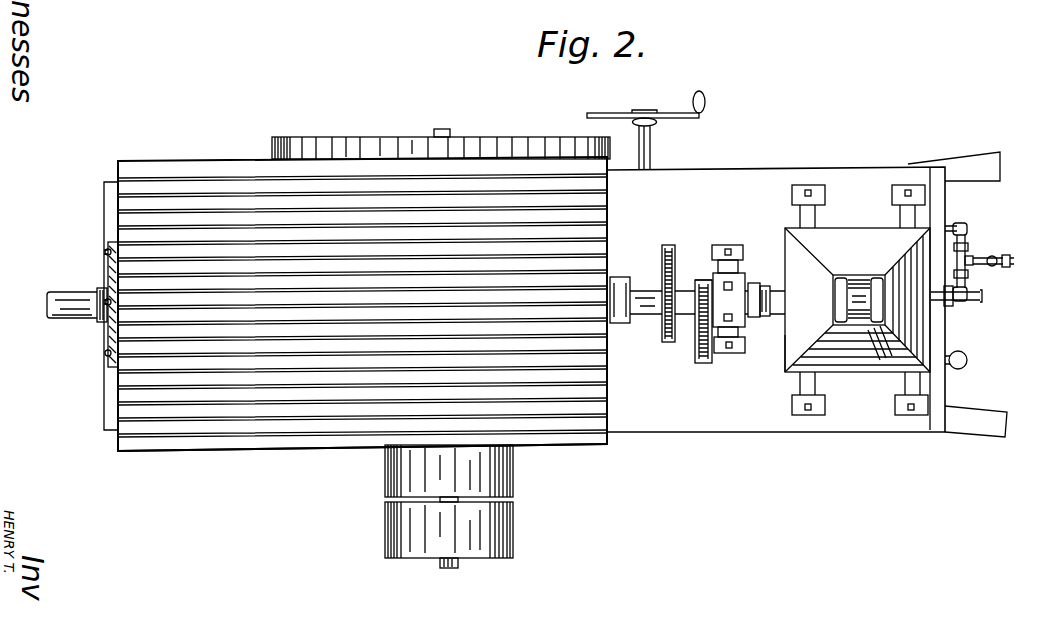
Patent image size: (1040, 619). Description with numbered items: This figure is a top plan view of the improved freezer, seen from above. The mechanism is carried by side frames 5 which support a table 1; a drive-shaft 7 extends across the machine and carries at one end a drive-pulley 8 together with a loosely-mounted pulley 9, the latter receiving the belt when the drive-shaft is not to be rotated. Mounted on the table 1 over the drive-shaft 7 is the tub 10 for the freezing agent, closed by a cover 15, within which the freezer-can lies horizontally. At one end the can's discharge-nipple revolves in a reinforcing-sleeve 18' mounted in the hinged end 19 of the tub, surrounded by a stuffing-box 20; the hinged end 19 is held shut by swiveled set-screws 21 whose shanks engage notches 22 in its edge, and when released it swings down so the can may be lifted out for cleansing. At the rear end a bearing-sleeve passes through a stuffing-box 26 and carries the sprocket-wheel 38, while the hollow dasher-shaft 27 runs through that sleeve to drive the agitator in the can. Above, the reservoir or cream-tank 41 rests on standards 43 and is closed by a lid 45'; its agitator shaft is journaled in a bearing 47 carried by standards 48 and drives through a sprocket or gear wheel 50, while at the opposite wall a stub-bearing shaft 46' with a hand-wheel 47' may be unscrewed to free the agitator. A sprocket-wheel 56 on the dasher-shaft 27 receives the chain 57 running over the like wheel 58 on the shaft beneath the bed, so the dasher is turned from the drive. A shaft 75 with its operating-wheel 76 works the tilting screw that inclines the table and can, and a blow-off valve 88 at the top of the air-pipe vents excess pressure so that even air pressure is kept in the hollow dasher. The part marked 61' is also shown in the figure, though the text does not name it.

The table 1 is at (776, 299).
The side frames 5 is at (957, 162).
The drive-shaft 7 is at (458, 565).
The drive-pulley 8 is at (505, 471).
The loosely-mounted pulley 9 is at (508, 522).
The tub 10 is at (292, 448).
The cover 15 is at (362, 304).
The reinforcing-sleeve 18' is at (72, 321).
The hinged end 19 is at (112, 342).
The stuffing-box 20 is at (98, 290).
The swiveled set-screws 21 is at (105, 252).
The notches 22 is at (111, 302).
The stuffing-box 26 is at (616, 324).
The hollow dasher-shaft 27 is at (684, 300).
The sprocket-wheel 38 is at (671, 337).
The reservoir or cream-tank 41 is at (786, 340).
The standards 43 is at (910, 380).
The lid 45' is at (857, 300).
The stub-bearing shaft 46' is at (965, 310).
The bearing 47 is at (729, 300).
The hand-wheel 47' is at (985, 291).
The standards 48 is at (736, 270).
The sprocket or gear wheel 50 is at (768, 287).
The sprocket-wheel 56 is at (702, 282).
The chain 57 is at (702, 328).
The sprocket wheel 58 is at (712, 360).
The cylinder 61' is at (441, 134).
The shaft 75 is at (651, 150).
The operating-wheel 76 is at (662, 116).
The blow-off valve 88 is at (979, 255).